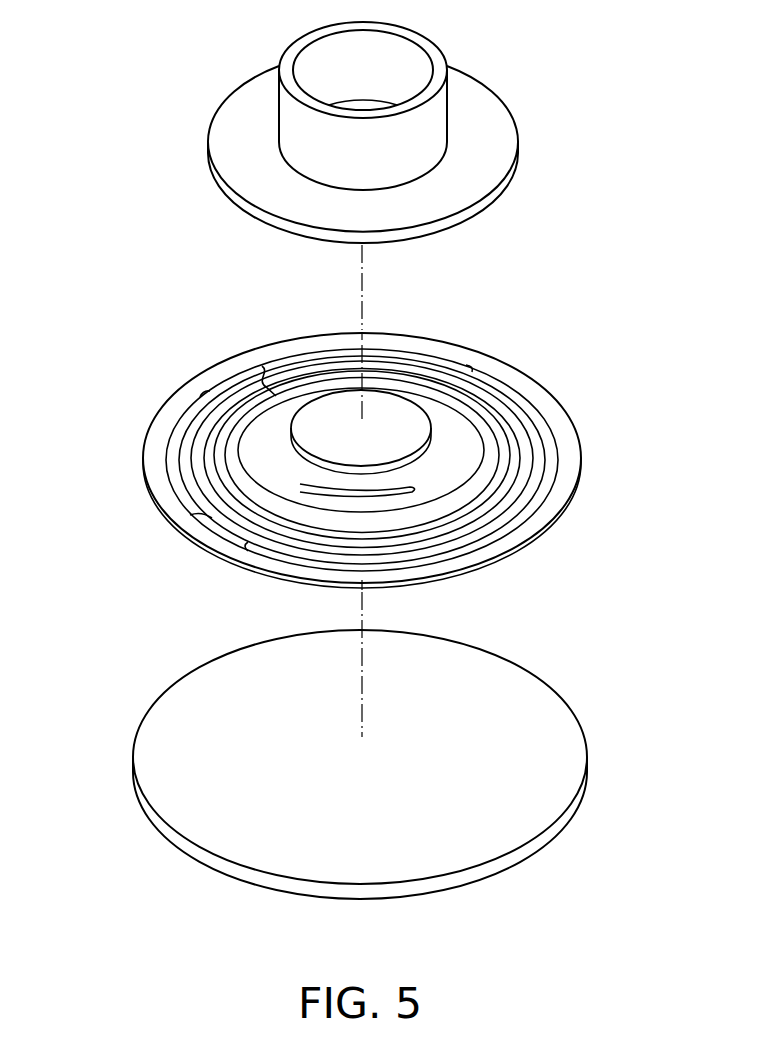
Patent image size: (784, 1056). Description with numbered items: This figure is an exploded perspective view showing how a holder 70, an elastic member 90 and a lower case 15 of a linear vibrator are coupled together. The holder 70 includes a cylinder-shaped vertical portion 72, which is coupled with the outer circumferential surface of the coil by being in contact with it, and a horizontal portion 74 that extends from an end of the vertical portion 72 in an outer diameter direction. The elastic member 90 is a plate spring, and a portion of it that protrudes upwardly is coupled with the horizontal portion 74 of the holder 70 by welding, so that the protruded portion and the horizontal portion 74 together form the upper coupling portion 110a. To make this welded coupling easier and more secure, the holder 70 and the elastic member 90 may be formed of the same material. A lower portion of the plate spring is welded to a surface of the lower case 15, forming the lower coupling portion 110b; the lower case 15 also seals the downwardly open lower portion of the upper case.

The holder 70 is at (475, 132).
The vertical portion 72 is at (440, 97).
The horizontal portion 74 is at (473, 182).
The elastic member 90 is at (330, 468).
The upper coupling portion 110a is at (275, 385).
The lower coupling portion 110b is at (203, 548).
The lower case 15 is at (553, 722).